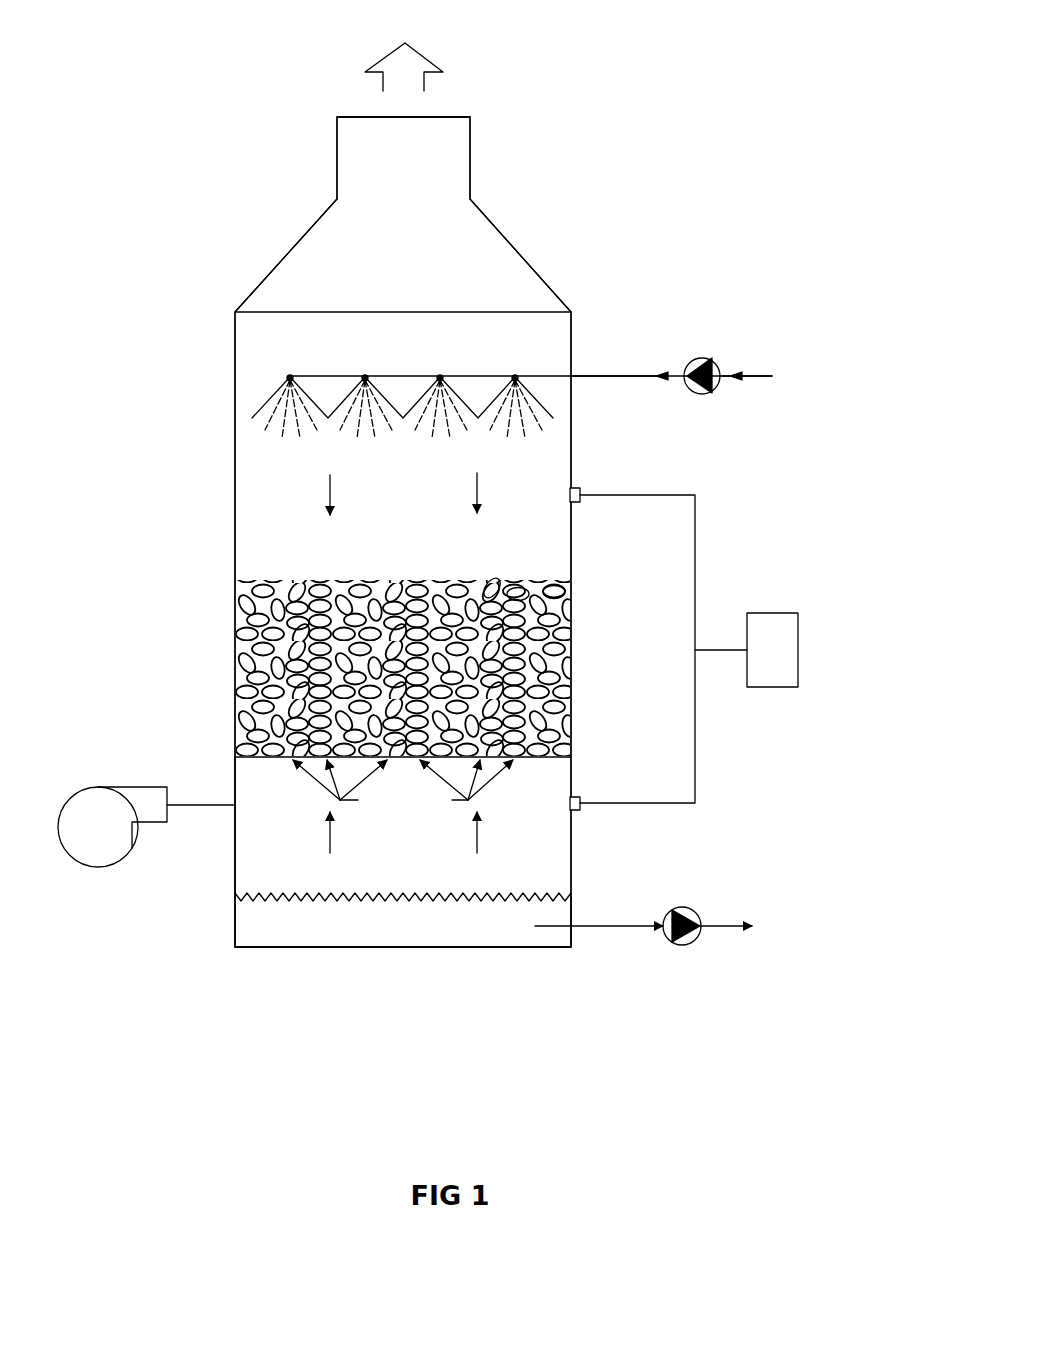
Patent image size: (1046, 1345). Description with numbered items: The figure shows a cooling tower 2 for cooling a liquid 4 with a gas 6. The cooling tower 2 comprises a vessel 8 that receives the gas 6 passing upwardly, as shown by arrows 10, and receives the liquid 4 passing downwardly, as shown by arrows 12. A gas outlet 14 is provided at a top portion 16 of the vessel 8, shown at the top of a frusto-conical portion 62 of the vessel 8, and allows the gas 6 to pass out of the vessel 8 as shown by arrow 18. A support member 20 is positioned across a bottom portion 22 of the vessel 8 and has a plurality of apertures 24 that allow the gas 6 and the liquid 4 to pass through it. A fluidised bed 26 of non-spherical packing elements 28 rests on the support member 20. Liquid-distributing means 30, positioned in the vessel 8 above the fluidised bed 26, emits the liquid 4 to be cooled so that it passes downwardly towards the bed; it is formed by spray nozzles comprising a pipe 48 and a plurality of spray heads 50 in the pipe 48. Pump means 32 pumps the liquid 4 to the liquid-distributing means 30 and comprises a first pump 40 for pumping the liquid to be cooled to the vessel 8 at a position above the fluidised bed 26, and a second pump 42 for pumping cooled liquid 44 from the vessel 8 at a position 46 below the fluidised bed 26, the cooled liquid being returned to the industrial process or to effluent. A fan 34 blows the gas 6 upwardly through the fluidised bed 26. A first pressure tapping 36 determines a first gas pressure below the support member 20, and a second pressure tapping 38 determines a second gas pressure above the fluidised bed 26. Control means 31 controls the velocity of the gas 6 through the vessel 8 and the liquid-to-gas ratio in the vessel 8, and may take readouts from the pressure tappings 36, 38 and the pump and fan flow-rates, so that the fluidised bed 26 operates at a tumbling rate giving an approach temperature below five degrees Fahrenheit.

The cooling tower 2 is at (454, 503).
The liquid 4 is at (347, 397).
The gas 6 is at (207, 804).
The vessel 8 is at (232, 507).
The arrows 10 is at (403, 838).
The arrows 12 is at (403, 490).
The gas outlet 14 is at (446, 92).
The top portion 16 is at (455, 158).
The arrow 18 is at (375, 52).
The support member 20 is at (440, 733).
The bottom portion 22 is at (351, 895).
The apertures 24 is at (403, 787).
The fluidised bed 26 is at (442, 668).
The non-spherical packing elements 28 is at (497, 583).
The liquid-distributing means 30 is at (368, 333).
The control means 31 is at (718, 649).
The pump means 32 is at (722, 627).
The fan 34 is at (105, 783).
The first pressure tapping 36 is at (616, 780).
The second pressure tapping 38 is at (616, 471).
The first pump 40 is at (743, 408).
The second pump 42 is at (671, 664).
The cooled liquid 44 is at (385, 951).
The position 46 is at (599, 953).
The pipe 48 is at (598, 338).
The spray heads 50 is at (361, 376).
The frusto-conical portion 62 is at (425, 254).